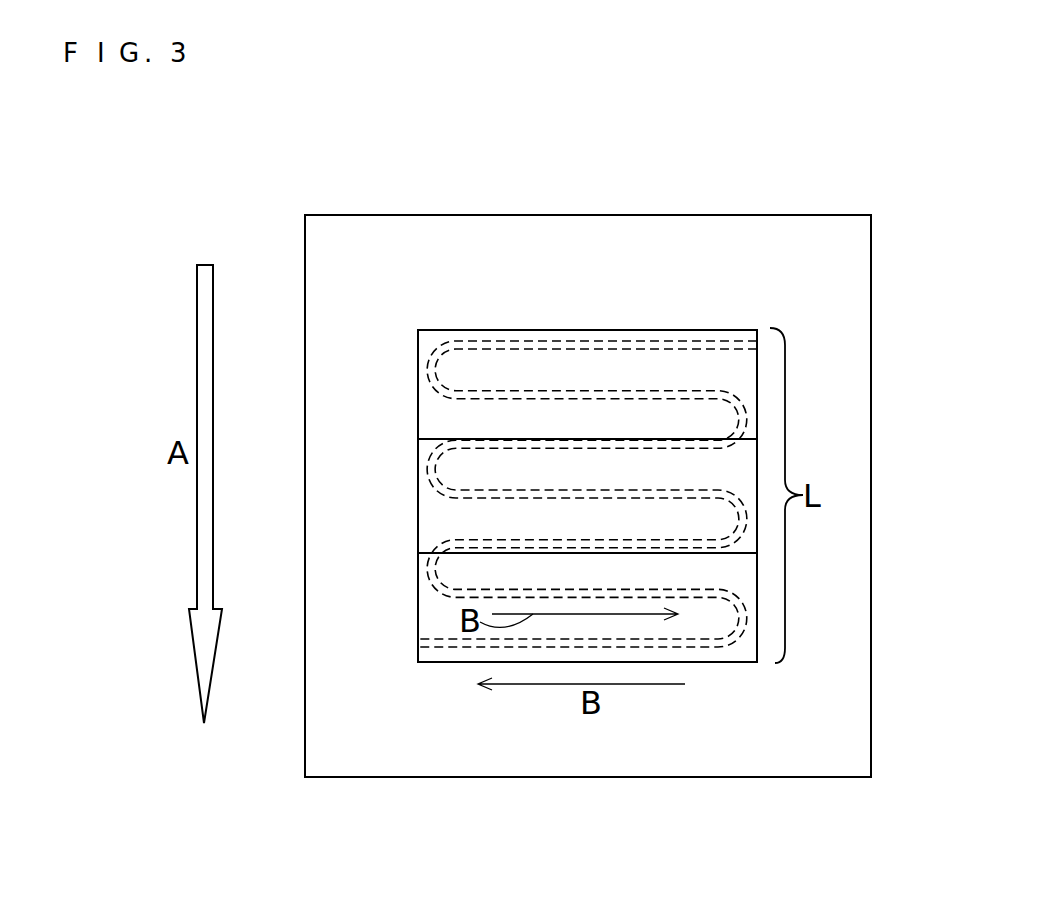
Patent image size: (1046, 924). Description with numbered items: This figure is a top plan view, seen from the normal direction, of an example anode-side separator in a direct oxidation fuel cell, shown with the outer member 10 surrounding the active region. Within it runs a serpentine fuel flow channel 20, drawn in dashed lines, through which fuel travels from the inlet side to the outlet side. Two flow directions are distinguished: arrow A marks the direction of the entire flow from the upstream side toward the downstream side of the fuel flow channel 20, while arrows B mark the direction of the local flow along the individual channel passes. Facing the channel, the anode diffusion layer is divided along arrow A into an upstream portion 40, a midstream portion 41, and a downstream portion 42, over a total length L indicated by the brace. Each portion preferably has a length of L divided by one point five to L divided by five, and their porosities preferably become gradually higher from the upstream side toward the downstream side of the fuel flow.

The substrate 10 is at (758, 238).
The fuel flow channel 20 is at (425, 376).
The upstream portion 40 is at (589, 372).
The midstream portion 41 is at (450, 520).
The downstream portion 42 is at (707, 620).